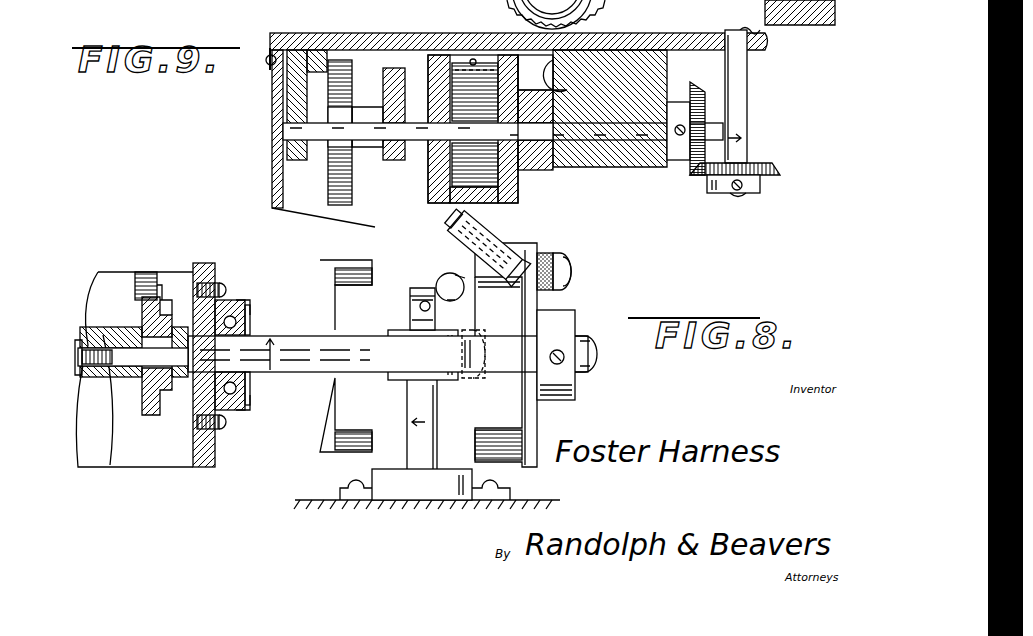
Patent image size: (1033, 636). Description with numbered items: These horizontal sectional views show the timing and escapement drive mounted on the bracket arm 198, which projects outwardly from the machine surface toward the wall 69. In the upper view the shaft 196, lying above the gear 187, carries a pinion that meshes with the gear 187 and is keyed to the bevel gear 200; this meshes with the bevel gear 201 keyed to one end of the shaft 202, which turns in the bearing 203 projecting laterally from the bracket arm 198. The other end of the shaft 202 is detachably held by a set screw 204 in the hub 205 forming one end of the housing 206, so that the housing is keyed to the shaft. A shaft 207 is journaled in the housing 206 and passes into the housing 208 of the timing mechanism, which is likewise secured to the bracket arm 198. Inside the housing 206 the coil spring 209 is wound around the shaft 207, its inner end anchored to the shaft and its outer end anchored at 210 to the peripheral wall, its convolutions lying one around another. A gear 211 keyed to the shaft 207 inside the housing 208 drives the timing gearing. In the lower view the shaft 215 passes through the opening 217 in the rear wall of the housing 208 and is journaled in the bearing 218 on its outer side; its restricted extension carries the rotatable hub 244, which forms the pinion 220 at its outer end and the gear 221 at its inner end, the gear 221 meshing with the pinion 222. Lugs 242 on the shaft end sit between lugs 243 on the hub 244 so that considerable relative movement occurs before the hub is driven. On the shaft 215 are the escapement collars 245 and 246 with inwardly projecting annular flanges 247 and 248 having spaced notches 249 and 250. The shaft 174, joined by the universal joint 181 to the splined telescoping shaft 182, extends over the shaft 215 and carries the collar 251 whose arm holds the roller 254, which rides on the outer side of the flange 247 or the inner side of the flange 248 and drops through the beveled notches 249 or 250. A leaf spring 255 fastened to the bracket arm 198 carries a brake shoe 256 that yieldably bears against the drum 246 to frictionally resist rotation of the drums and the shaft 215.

In FIG. 8, the wall 69 is at (327, 503).
In FIG. 8, the shaft 174 is at (420, 458).
In FIG. 8, the universal joint 181 is at (410, 302).
In FIG. 8, the splined telescoping shaft 182 is at (490, 226).
In FIG. 9, the gear 187 is at (600, 4).
In FIG. 9, the shaft 196 is at (740, 85).
In FIG. 9, the bracket arm 198 is at (283, 48).
In FIG. 9, the bevel gear 200 is at (765, 165).
In FIG. 9, the bevel gear 201 is at (706, 170).
In FIG. 9, the shaft 202 is at (663, 167).
In FIG. 9, the bearing 203 is at (690, 165).
In FIG. 9, the set screw 204 is at (548, 172).
In FIG. 9, the hub 205 is at (528, 108).
In FIG. 9, the housing 206 is at (520, 195).
In FIG. 9, the shaft 207 is at (340, 180).
In FIG. 9, the housing 208 is at (327, 185).
In FIG. 8, the housing 208 is at (183, 460).
In FIG. 9, the coil spring 209 is at (455, 80).
In FIG. 9, the anchor point 210 is at (473, 58).
In FIG. 9, the gear 211 is at (335, 170).
In FIG. 8, the shaft 215 is at (262, 336).
In FIG. 8, the opening 217 is at (232, 300).
In FIG. 8, the bearing 218 is at (250, 305).
In FIG. 8, the pinion 220 is at (80, 462).
In FIG. 8, the gear 221 is at (150, 420).
In FIG. 8, the pinion 222 is at (145, 272).
In FIG. 8, the lugs 242 is at (188, 352).
In FIG. 8, the lugs 243 is at (178, 300).
In FIG. 8, the hub 244 is at (105, 335).
In FIG. 8, the escapement collar 245 is at (310, 434).
In FIG. 8, the escapement collar 246 is at (560, 331).
In FIG. 8, the annular flange 247 is at (362, 455).
In FIG. 8, the annular flange 248 is at (525, 465).
In FIG. 8, the notches 249 is at (372, 278).
In FIG. 8, the notches 250 is at (510, 277).
In FIG. 8, the collar 251 is at (400, 385).
In FIG. 8, the roller 254 is at (475, 380).
In FIG. 8, the leaf spring 255 is at (572, 272).
In FIG. 8, the brake shoe 256 is at (545, 253).